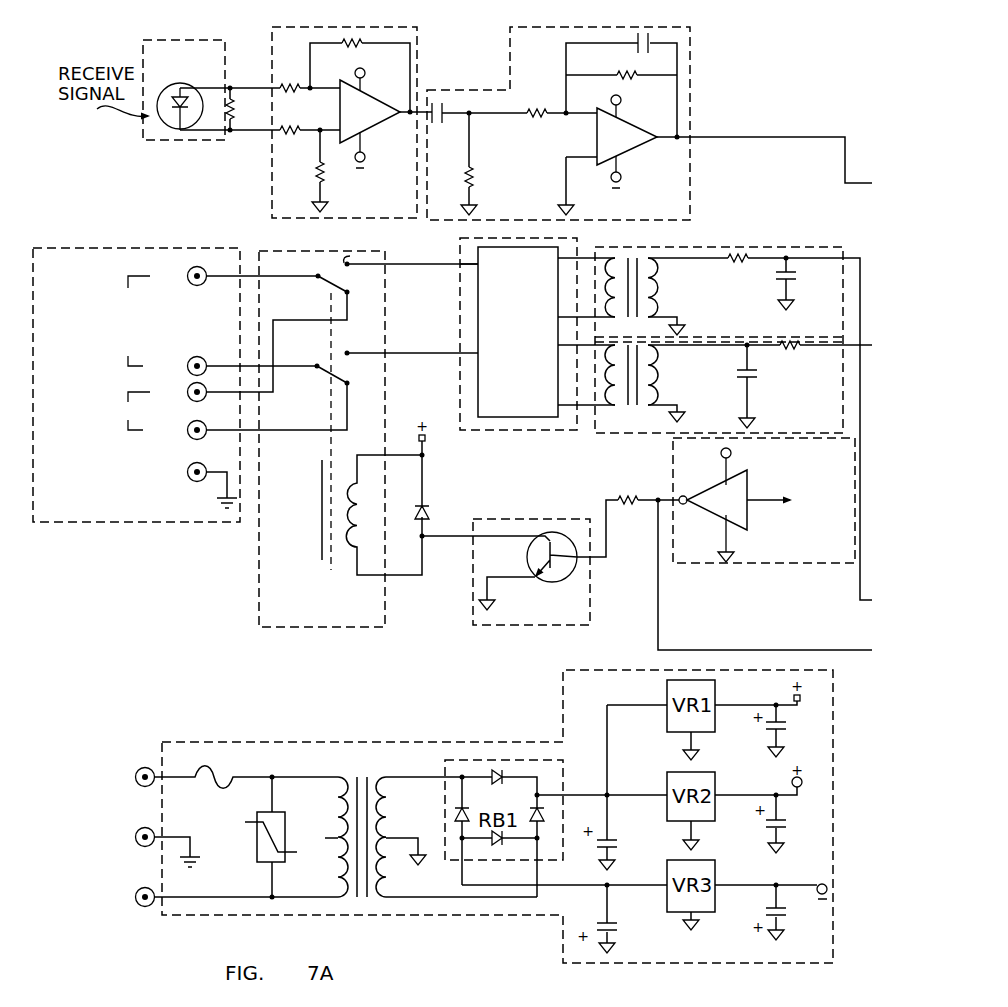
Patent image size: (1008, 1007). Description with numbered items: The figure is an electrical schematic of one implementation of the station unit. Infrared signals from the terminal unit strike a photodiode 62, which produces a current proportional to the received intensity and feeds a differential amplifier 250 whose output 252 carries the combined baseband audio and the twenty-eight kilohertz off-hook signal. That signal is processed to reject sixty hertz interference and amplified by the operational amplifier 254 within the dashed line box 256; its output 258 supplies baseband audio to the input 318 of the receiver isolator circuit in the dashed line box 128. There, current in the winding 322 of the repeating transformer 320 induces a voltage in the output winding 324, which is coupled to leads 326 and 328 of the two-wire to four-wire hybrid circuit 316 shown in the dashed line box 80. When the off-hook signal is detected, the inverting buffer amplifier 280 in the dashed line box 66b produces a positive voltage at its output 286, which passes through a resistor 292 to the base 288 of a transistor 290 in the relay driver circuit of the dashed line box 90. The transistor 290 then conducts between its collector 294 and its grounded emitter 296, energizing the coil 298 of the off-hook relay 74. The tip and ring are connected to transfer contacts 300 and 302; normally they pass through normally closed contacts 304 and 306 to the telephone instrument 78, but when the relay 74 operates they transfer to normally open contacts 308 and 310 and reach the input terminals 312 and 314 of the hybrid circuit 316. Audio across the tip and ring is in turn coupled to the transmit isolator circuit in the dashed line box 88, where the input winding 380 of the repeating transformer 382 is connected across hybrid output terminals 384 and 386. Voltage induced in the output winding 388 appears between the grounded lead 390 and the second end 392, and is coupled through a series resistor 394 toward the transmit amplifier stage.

The photodiode 62 is at (197, 40).
The differential amplifier 250 is at (391, 107).
The output of differential amplifier 252 is at (432, 101).
The operational amplifier 254 is at (638, 147).
The dashed line box 256 is at (690, 100).
The output of amplifier 254 258 is at (721, 137).
The telephone instrument 78 is at (188, 248).
The transfer contact 300 is at (311, 292).
The transfer contact 302 is at (326, 362).
The normally closed contact 304 is at (362, 279).
The normally closed contact 306 is at (347, 386).
The normally open contact 308 is at (366, 250).
The normally open contact 310 is at (343, 353).
The input terminal 312 is at (421, 266).
The input terminal 314 is at (410, 340).
The two-wire to four-wire hybrid circuit 316 is at (475, 264).
The off-hook relay 74 is at (385, 627).
The coil 298 is at (366, 502).
The collector 294 is at (513, 535).
The transistor 290 is at (570, 536).
The emitter 296 is at (497, 578).
The resistor 292 is at (627, 504).
The base 288 is at (606, 560).
The output of amplifier 280 286 is at (659, 498).
The inverting buffer amplifier 280 is at (704, 491).
The dashed line box 66b is at (765, 564).
The dashed line box 90 is at (522, 626).
The dashed line box 80 is at (522, 431).
The output terminal 384 is at (567, 258).
The output terminal 386 is at (563, 316).
The lead 326 is at (563, 345).
The output winding 324 is at (603, 377).
The lead 328 is at (563, 405).
The input winding 380 is at (616, 252).
The output winding 388 is at (656, 254).
The repeating transformer 382 is at (650, 265).
The second end 392 is at (712, 260).
The lead 390 is at (680, 325).
The series resistor 394 is at (738, 255).
The transmit isolator circuit 88 is at (786, 247).
The input of receiver isolator circuit 318 is at (856, 345).
The winding 322 is at (660, 392).
The repeating transformer 320 is at (636, 403).
The dashed line box 128 is at (647, 434).